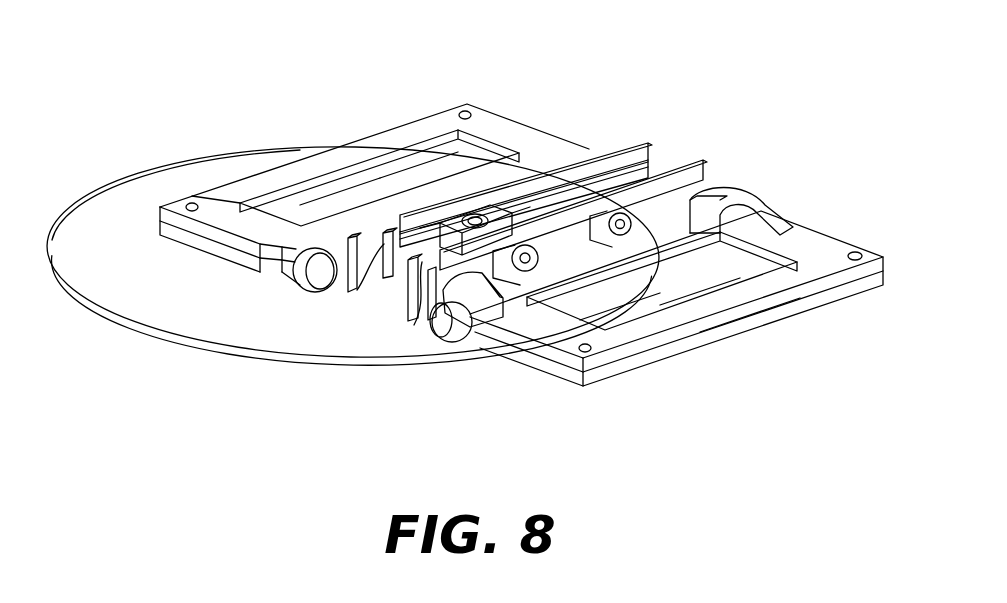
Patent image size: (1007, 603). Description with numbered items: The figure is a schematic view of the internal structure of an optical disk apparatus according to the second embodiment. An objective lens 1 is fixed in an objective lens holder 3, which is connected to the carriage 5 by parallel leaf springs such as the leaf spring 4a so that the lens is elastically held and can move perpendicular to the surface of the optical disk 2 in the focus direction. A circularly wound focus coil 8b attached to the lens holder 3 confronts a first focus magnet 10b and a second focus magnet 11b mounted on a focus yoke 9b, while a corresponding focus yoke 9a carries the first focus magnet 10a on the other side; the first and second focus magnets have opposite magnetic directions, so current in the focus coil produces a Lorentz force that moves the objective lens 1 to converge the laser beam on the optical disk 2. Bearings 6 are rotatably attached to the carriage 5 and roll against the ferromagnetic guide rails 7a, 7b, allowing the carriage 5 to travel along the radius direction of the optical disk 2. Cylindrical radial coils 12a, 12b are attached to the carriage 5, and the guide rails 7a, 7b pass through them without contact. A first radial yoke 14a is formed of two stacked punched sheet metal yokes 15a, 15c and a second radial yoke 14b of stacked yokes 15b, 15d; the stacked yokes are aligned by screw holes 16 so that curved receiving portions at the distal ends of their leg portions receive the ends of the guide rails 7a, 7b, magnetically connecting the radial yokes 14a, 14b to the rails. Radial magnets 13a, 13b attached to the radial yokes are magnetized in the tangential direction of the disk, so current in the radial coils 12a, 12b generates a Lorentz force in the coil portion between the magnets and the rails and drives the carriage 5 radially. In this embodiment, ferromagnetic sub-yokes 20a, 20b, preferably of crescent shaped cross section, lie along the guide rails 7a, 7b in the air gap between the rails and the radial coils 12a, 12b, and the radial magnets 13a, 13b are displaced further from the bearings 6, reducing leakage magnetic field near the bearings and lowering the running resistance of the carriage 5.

The objective lens 1 is at (487, 216).
The optical disk 2 is at (175, 337).
The objective lens holder 3 is at (406, 306).
The leaf spring 4a is at (534, 203).
The carriage 5 is at (642, 153).
The bearings 6 is at (622, 223).
The guide rail 7a is at (443, 330).
The guide rail 7b is at (312, 273).
The focus coil 8b is at (467, 212).
The focus yoke 9a is at (700, 172).
The focus yoke 9b is at (640, 152).
The focus magnet 10a is at (443, 304).
The focus magnet 10b is at (350, 287).
The focus magnet 11b is at (377, 273).
The radial coil 12a is at (585, 268).
The radial coil 12b is at (400, 214).
The radial magnet 13a is at (703, 283).
The radial magnet 13b is at (340, 190).
The first radial yoke 14a is at (777, 340).
The second radial yoke 14b is at (437, 109).
The yoke 15a is at (770, 227).
The yoke 15b is at (257, 183).
The yoke 15c is at (807, 308).
The yoke 15d is at (218, 250).
The screw holes 16 is at (192, 203).
The sub-yoke 20a is at (458, 322).
The sub-yoke 20b is at (293, 290).